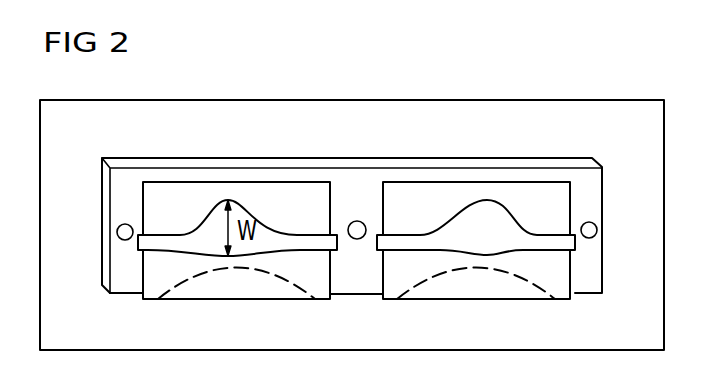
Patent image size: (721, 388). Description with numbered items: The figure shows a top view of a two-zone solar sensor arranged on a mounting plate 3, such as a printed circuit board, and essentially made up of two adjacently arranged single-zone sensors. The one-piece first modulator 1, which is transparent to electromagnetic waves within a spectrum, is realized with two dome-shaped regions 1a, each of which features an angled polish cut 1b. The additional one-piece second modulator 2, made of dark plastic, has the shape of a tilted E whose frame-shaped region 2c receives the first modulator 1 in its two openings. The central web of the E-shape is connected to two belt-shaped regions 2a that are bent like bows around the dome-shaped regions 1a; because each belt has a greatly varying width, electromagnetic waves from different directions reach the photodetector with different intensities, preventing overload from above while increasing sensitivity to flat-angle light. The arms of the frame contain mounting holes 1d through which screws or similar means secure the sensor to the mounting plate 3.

The first modulator 1 is at (358, 229).
The dome-shaped region of first modulator 1a is at (155, 207).
The angled polish cut region of first modulator 1b is at (238, 290).
The mounting hole 1d is at (357, 240).
The second modulator 2 is at (357, 208).
The belt-shaped region of second modulator 2a is at (152, 243).
The frame-shaped region of second modulator 2c is at (131, 178).
The mounting surface 3 is at (462, 100).